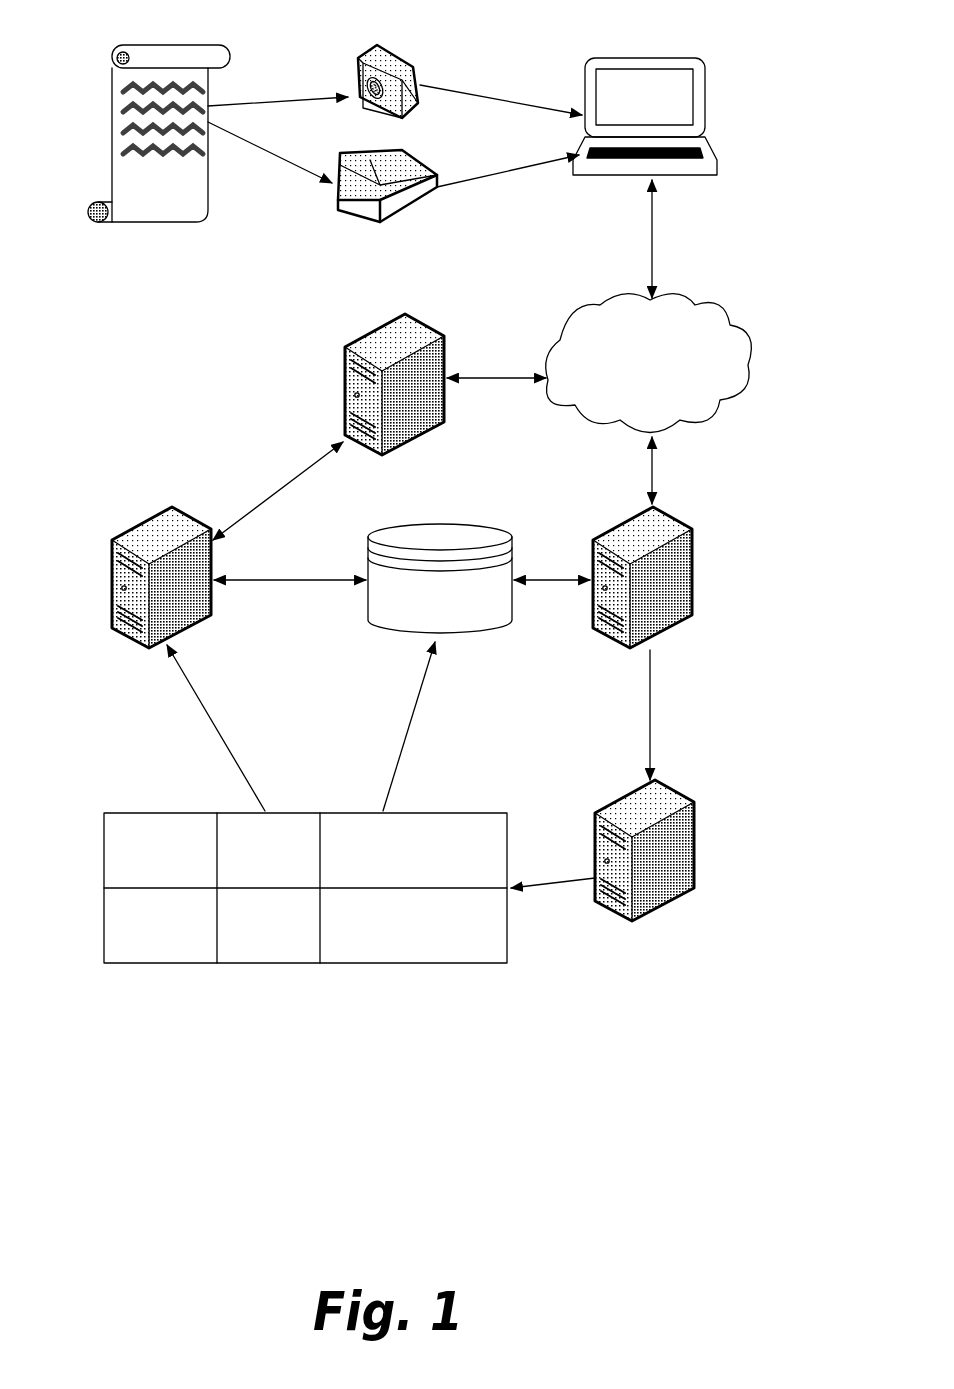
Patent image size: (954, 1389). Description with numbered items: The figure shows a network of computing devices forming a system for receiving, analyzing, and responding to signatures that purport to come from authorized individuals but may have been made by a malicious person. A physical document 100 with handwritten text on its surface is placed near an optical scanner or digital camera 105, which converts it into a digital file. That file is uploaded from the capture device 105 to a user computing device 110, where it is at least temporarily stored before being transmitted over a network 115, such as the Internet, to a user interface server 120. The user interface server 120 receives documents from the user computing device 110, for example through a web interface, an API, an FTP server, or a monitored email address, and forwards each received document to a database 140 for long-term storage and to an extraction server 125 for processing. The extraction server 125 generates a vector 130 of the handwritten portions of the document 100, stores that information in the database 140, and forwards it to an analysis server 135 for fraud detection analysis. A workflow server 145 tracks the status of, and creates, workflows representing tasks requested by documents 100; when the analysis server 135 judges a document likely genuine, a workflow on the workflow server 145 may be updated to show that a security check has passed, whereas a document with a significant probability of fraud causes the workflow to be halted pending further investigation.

The physical document 100 is at (148, 222).
The optical scanner or digital camera 105 is at (418, 68).
The user computing device 110 is at (705, 117).
The network 115 is at (649, 363).
The user interface server 120 is at (695, 575).
The extraction server 125 is at (698, 840).
The vector of handwritten portions 130 is at (380, 965).
The analysis server 135 is at (115, 638).
The database 140 is at (440, 578).
The workflow server 145 is at (340, 350).